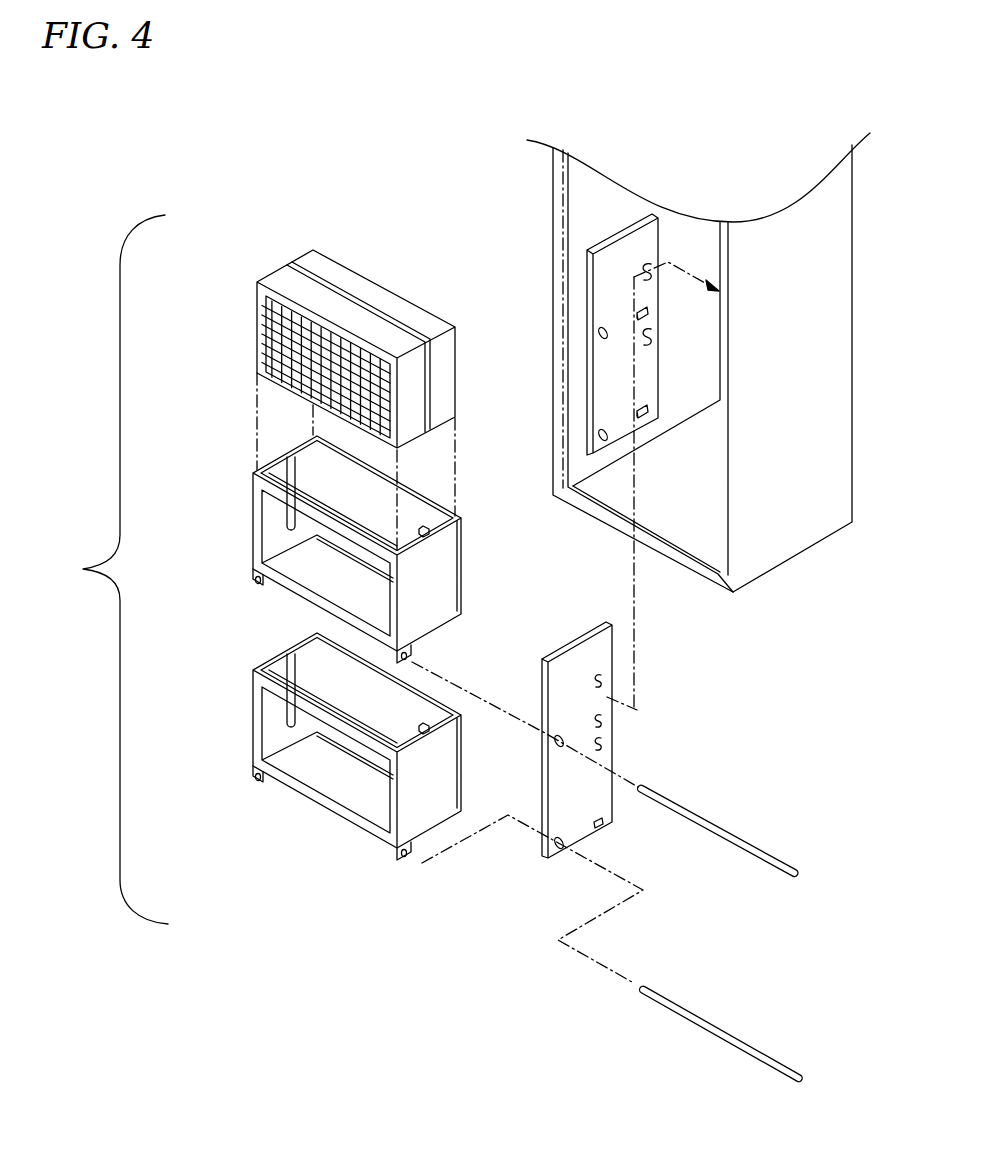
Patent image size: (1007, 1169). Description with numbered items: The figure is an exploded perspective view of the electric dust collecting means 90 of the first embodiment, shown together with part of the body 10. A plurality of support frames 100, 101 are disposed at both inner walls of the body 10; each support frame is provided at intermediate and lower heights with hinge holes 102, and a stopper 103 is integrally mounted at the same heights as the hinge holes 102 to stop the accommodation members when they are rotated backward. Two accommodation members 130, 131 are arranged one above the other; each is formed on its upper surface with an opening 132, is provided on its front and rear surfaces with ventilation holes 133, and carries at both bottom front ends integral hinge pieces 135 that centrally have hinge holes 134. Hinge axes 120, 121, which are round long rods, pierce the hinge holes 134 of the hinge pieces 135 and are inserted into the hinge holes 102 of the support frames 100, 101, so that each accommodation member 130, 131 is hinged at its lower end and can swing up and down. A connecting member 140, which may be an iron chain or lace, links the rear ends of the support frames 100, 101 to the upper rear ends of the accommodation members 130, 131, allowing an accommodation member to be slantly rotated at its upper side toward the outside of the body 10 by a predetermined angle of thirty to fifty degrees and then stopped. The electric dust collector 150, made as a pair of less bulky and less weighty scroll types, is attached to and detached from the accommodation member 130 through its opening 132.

The body 10 is at (812, 222).
The electric dust collecting means 90 is at (74, 582).
The support frame 100 is at (597, 234).
The support frame 101 is at (613, 811).
The hinge hole 102 is at (599, 432).
The stopper 103 is at (648, 320).
The hinge axis 120 is at (712, 827).
The hinge axis 121 is at (710, 1021).
The accommodation member 130 is at (251, 470).
The accommodation member 131 is at (248, 682).
The opening 132 is at (300, 495).
The ventilation hole 133 is at (425, 510).
The hinge hole 134 is at (412, 655).
The hinge piece 135 is at (256, 581).
The connecting member 140 is at (652, 333).
The electric dust collector 150 is at (257, 296).